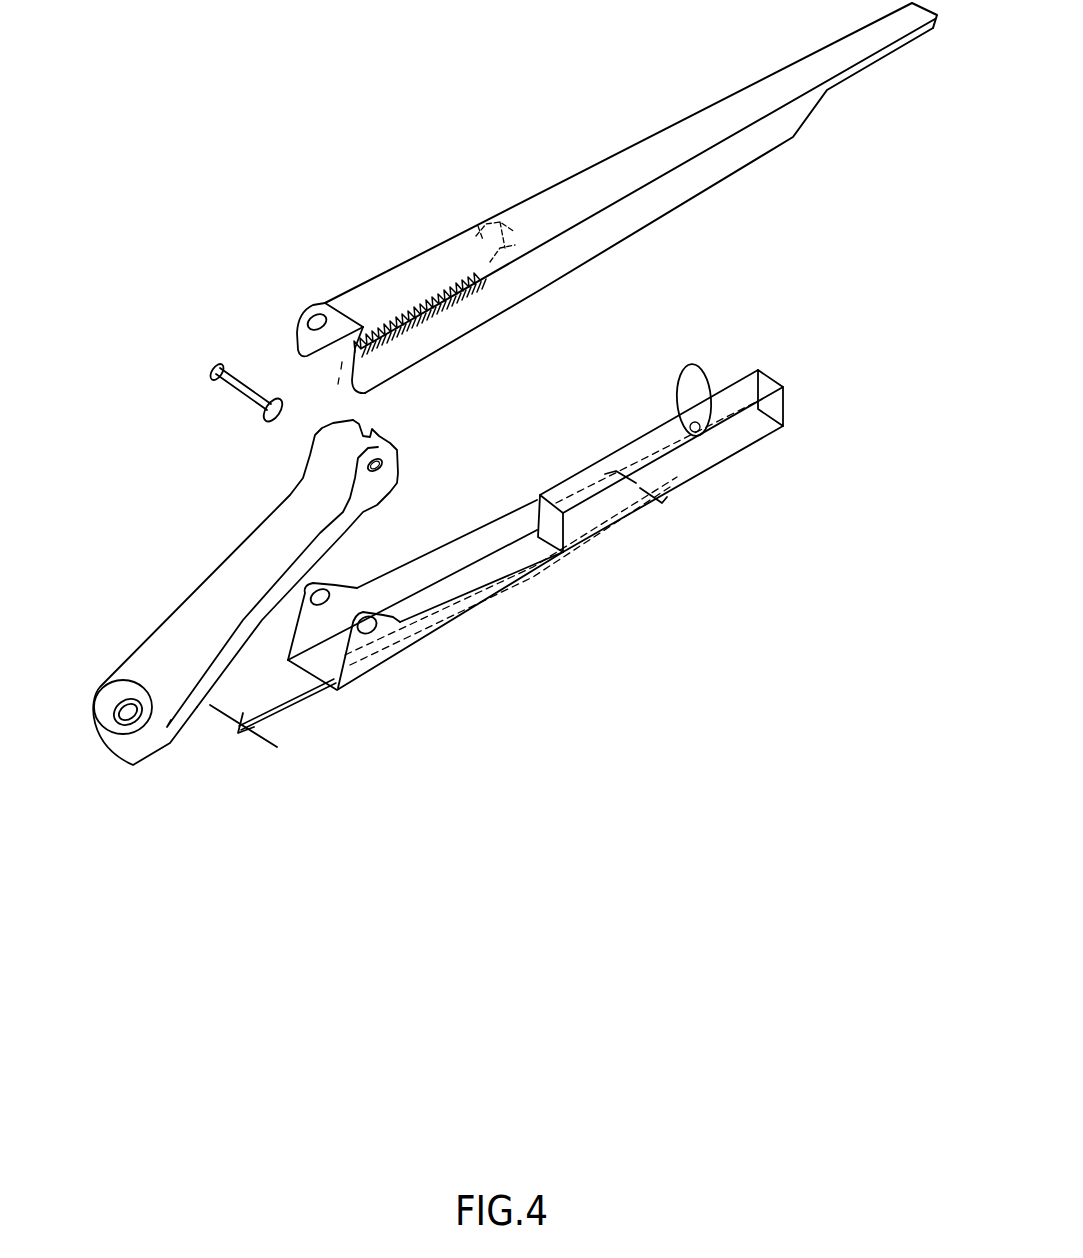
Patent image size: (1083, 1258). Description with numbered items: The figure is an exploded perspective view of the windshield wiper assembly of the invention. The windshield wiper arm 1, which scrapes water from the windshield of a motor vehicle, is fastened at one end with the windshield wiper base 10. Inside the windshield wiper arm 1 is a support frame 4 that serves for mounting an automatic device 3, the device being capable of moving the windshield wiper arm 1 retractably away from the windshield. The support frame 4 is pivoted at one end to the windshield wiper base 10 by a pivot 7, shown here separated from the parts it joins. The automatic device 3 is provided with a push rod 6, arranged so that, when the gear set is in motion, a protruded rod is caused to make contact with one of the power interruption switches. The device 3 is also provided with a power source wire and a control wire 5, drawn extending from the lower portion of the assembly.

The windshield wiper arm 1 is at (385, 292).
The automatic device 3 is at (695, 463).
The support frame 4 is at (553, 568).
The control wire 5 is at (293, 707).
The push rod 6 is at (696, 380).
The pivot 7 is at (217, 360).
The windshield wiper base 10 is at (168, 640).